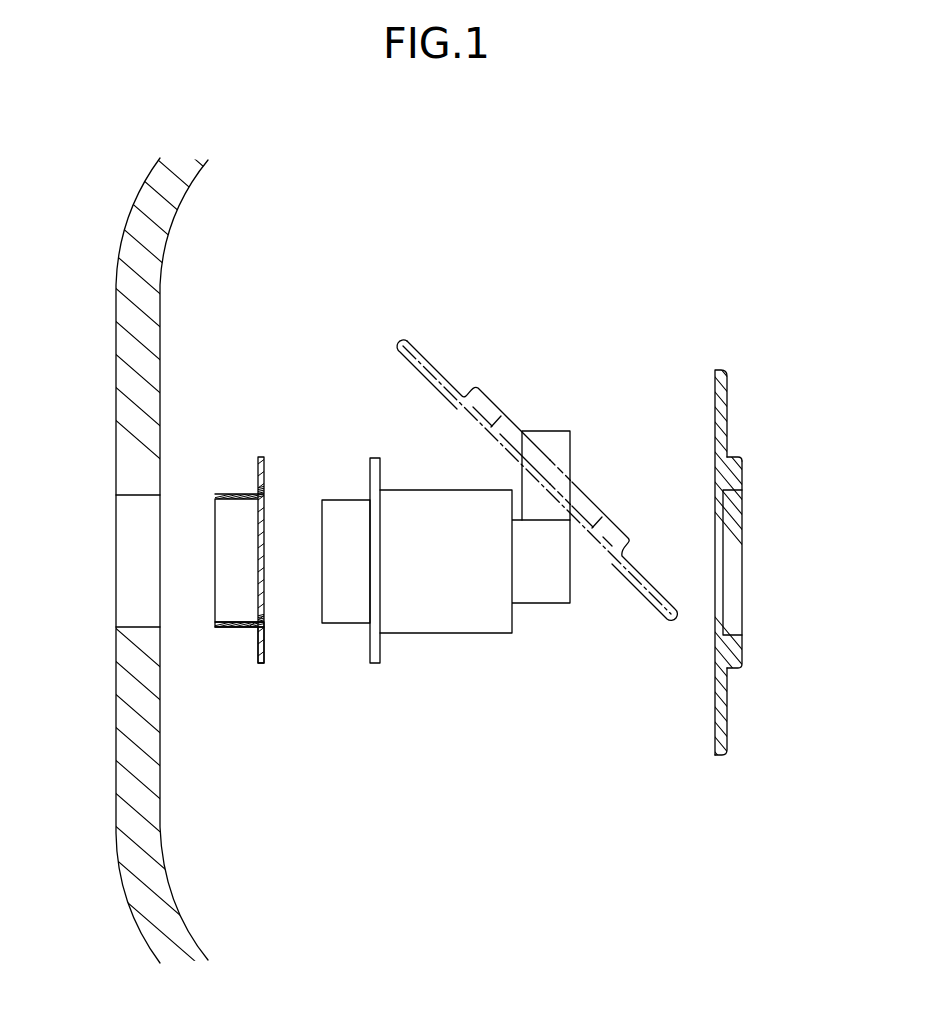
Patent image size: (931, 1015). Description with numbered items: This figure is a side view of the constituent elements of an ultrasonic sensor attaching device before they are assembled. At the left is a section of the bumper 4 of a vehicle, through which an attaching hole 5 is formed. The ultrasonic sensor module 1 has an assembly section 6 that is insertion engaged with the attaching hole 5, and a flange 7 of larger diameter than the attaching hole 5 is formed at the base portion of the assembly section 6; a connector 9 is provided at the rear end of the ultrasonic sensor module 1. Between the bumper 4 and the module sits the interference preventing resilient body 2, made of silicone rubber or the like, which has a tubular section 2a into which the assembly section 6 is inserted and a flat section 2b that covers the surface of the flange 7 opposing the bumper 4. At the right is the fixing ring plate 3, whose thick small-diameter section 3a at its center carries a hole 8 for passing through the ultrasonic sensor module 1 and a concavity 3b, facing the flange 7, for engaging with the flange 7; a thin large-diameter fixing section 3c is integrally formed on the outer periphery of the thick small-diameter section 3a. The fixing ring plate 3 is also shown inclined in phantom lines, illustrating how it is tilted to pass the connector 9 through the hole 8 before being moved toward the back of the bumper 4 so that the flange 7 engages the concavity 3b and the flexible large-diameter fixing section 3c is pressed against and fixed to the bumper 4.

The ultrasonic sensor module 1 is at (427, 503).
The interference preventing resilient body 2 is at (263, 456).
The tubular section 2a is at (226, 628).
The flat section 2b is at (267, 651).
The fixing ring plate 3 is at (440, 370).
The thick small-diameter section 3a is at (742, 472).
The concavity 3b is at (726, 458).
The thin large-diameter fixing section 3c is at (728, 726).
The bumper 4 is at (124, 316).
The attaching hole 5 is at (140, 625).
The assembly section 6 is at (345, 516).
The flange 7 is at (378, 462).
The hole 8 is at (736, 635).
The connector 9 is at (557, 437).